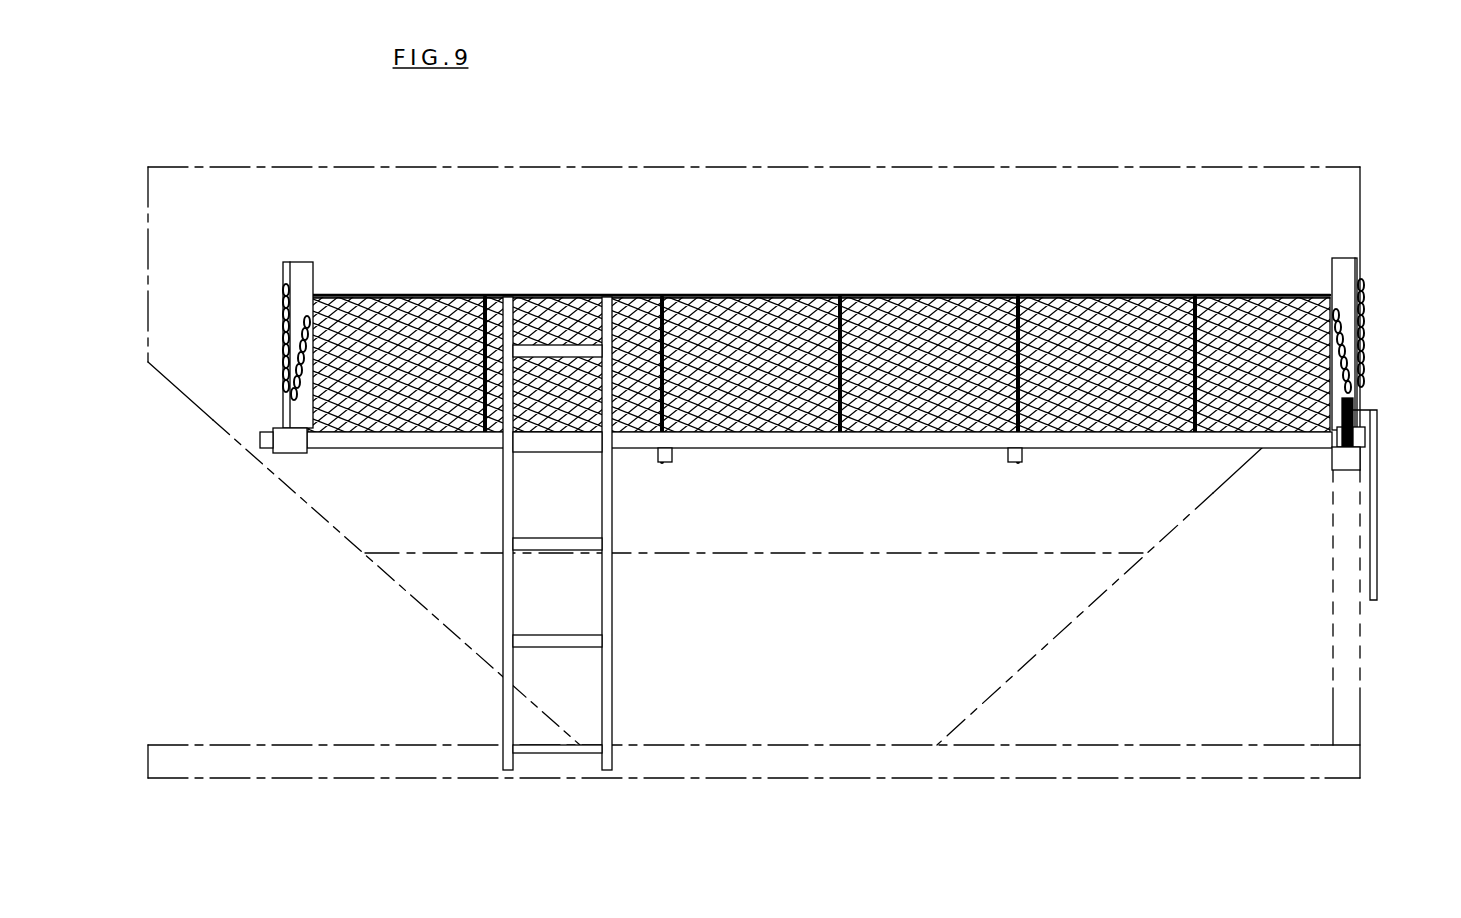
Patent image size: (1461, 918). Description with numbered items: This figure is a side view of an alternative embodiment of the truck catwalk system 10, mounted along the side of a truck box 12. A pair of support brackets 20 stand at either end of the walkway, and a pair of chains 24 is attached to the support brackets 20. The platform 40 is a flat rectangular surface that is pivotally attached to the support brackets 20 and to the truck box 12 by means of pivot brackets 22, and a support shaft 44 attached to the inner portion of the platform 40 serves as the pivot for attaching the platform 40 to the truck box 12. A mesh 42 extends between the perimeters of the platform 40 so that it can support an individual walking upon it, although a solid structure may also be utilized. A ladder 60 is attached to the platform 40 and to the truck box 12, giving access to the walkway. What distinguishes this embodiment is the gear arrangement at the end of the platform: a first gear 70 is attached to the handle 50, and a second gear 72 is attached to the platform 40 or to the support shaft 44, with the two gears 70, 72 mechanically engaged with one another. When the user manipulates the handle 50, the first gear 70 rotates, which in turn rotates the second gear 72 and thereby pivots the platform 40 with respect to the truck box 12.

The truck catwalk system 10 is at (877, 87).
The truck box 12 is at (946, 166).
The support brackets 20 is at (300, 262).
The pivot bracket 22 is at (290, 454).
The chains 24 is at (282, 362).
The platform 40 is at (819, 346).
The mesh 42 is at (425, 330).
The support shaft 44 is at (767, 447).
The handle 50 is at (1380, 440).
The ladder 60 is at (613, 516).
The first gear 70 is at (1358, 400).
The second gear 72 is at (1342, 470).